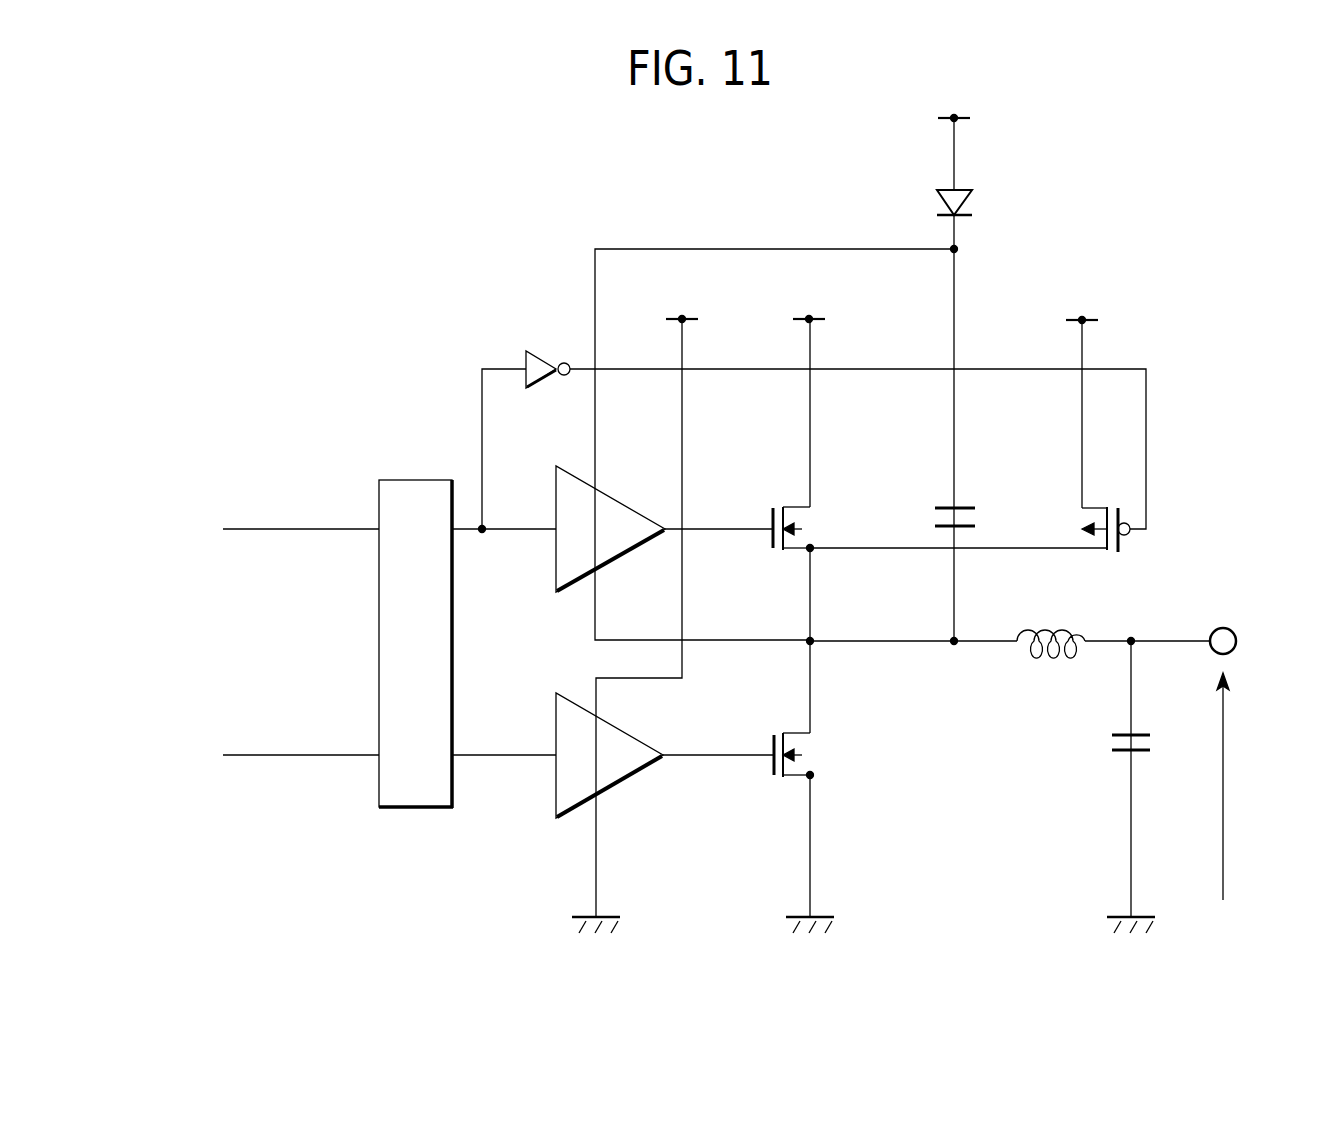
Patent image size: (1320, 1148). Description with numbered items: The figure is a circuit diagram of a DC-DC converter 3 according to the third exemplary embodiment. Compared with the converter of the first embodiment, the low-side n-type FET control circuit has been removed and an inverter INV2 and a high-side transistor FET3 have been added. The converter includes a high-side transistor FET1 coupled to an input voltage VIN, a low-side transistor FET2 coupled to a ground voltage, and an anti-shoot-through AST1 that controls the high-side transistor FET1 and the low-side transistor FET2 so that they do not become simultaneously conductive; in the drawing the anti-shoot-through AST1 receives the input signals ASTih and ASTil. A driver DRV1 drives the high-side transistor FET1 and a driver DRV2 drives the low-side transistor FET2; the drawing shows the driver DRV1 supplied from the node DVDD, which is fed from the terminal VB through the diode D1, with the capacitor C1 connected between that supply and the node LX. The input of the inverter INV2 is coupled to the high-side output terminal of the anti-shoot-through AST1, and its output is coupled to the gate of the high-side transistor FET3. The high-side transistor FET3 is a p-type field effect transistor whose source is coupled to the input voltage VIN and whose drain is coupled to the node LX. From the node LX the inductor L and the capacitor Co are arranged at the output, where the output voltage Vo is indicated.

The DC-DC converter 3 is at (655, 152).
The driver supply node DVDD is at (595, 268).
The boost voltage terminal VB is at (951, 136).
The diode D1 is at (976, 219).
The capacitor C1 is at (975, 447).
The inverter INV2 is at (537, 351).
The input voltage VIN is at (805, 397).
The anti-shoot-through AST1 is at (379, 490).
The high-side input signal ASTih is at (260, 530).
The low-side input signal ASTil is at (260, 755).
The driver DRV1 is at (570, 473).
The driver DRV2 is at (573, 812).
The high-side transistor FET1 is at (829, 620).
The low-side transistor FET2 is at (829, 825).
The high-side transistor FET3 is at (997, 546).
The node LX is at (890, 627).
The inductor L is at (1074, 625).
The capacitor Co is at (1157, 778).
The output voltage Vo is at (1240, 786).